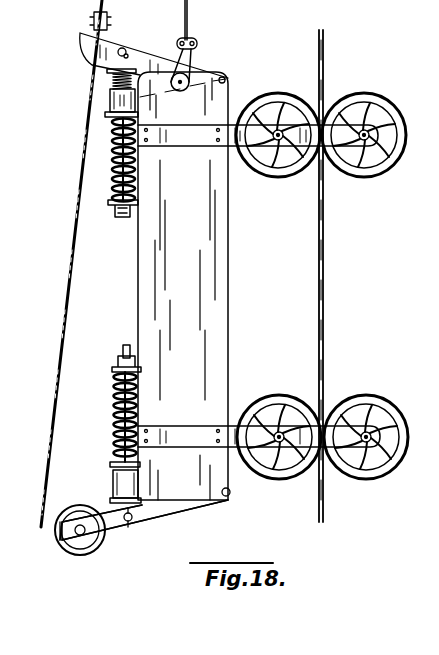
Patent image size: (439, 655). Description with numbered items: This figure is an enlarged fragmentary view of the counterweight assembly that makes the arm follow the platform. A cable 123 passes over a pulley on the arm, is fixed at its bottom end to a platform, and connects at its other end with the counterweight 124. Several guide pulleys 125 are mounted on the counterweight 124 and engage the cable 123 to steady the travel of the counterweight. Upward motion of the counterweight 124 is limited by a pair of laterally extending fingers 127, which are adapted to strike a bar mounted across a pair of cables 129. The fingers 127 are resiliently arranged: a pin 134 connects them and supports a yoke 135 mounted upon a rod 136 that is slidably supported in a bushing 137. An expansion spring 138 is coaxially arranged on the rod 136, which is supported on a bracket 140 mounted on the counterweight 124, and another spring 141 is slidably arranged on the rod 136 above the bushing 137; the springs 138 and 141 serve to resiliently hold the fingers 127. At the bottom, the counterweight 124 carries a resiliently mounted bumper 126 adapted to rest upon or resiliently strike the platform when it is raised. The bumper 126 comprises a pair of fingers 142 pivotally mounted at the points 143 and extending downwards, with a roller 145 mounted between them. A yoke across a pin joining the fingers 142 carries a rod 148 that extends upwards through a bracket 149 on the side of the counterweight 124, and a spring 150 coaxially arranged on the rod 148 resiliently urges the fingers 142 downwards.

The cable 123 is at (188, 19).
The counterweight 124 is at (216, 300).
The guide pulleys 125 is at (356, 176).
The bottom bumper 126 is at (100, 20).
The fingers 127 is at (170, 64).
The cables 129 is at (76, 216).
The pin 134 is at (122, 48).
The yoke 135 is at (107, 71).
The rod 136 is at (112, 134).
The bushing 137 is at (110, 100).
The expansion spring 138 is at (112, 166).
The bracket 140 is at (109, 201).
The spring 141 is at (112, 80).
The fingers 142 is at (131, 521).
The points 143 is at (231, 493).
The roller 145 is at (86, 494).
The rod 148 is at (126, 345).
The bracket 149 is at (118, 363).
The spring 150 is at (113, 396).